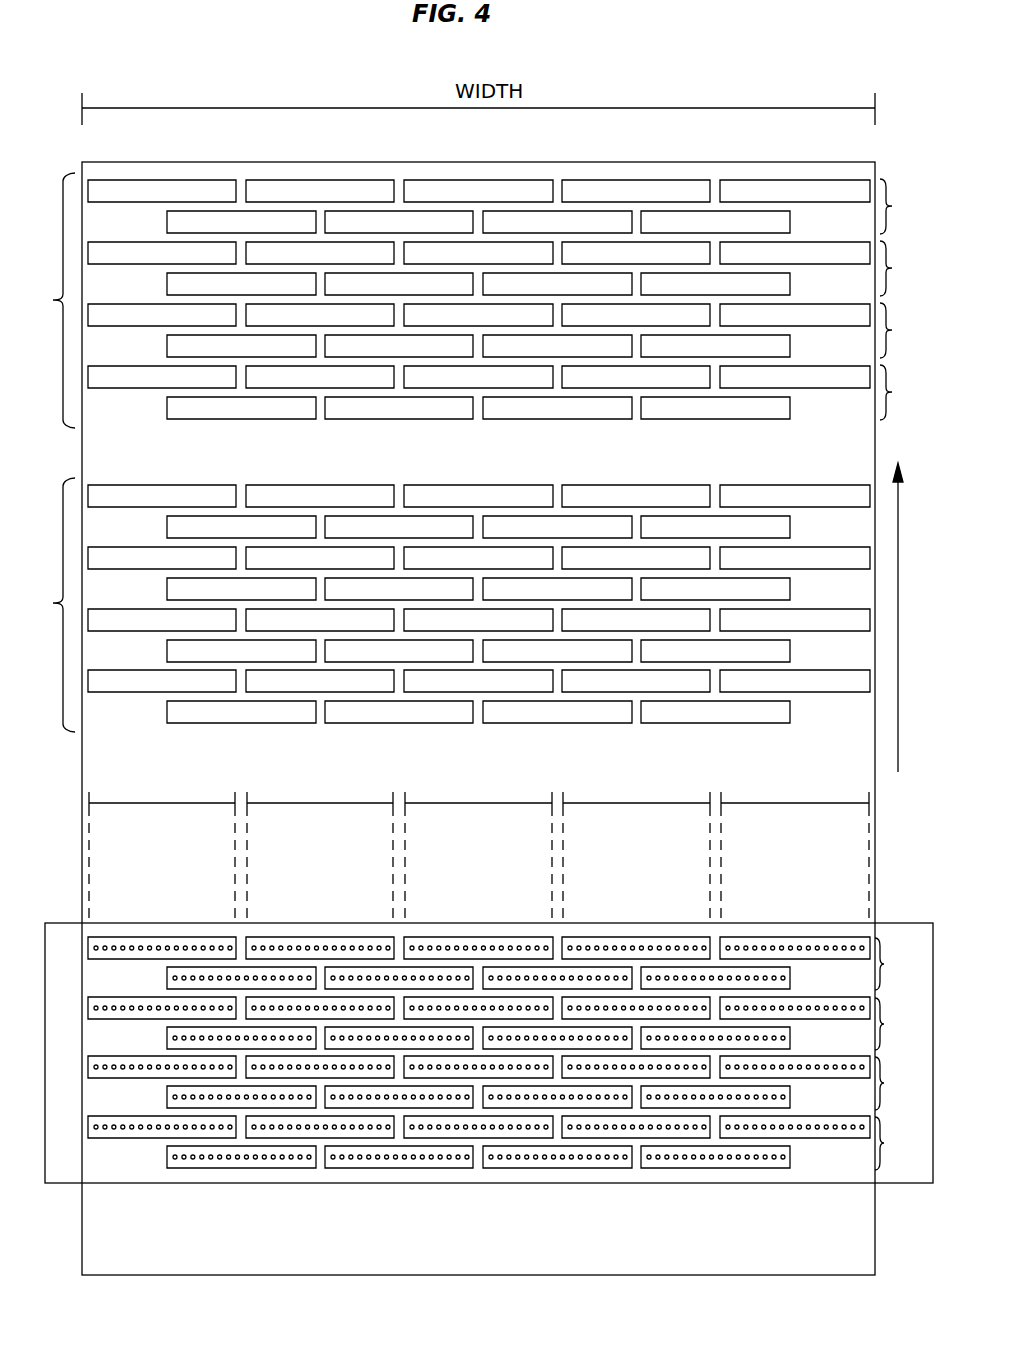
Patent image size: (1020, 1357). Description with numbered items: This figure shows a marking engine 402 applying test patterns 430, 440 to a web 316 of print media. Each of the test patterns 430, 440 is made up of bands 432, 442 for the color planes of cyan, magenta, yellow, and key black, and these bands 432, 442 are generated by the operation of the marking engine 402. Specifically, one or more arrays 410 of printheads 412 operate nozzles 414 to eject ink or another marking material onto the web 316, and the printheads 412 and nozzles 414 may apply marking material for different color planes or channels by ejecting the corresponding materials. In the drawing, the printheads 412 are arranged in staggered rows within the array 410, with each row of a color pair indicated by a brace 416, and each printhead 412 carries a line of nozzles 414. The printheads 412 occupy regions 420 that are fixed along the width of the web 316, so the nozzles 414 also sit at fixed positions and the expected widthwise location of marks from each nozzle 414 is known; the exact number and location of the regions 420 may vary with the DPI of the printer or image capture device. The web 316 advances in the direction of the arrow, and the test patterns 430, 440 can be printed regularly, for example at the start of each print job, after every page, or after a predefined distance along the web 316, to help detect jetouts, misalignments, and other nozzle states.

The marking engine 402 is at (782, 1207).
The web 316 is at (876, 446).
The array 410 is at (327, 1183).
The printhead 412 is at (188, 937).
The nozzle 414 is at (122, 946).
The nozzle array pair 416 is at (508, 1052).
The region 420 is at (165, 803).
The test pattern 430 is at (444, 605).
The band 432 is at (167, 518).
The test pattern 440 is at (467, 300).
The band 442 is at (167, 213).